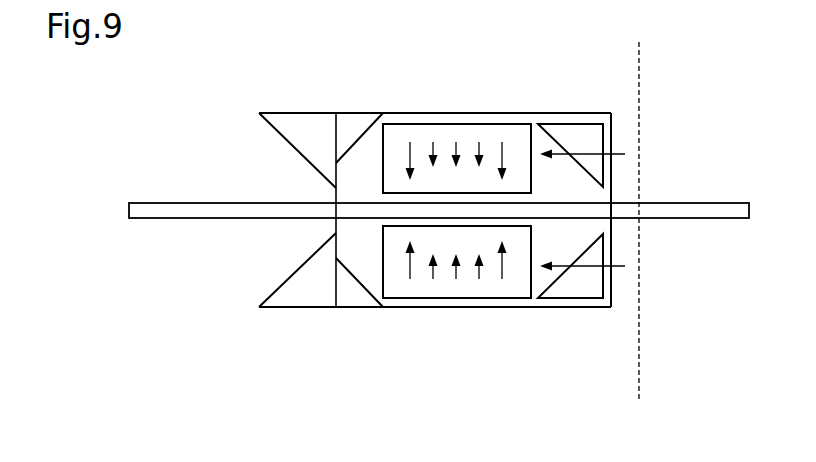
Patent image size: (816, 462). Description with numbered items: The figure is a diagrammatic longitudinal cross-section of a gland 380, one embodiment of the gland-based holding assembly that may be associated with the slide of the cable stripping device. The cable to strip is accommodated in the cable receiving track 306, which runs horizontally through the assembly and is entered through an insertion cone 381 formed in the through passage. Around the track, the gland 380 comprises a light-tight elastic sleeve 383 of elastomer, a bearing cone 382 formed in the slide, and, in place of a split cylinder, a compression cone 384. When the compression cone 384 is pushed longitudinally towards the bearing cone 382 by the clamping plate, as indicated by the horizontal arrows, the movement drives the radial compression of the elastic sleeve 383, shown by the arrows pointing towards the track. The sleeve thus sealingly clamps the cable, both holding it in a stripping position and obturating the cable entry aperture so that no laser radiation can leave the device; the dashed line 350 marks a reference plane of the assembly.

The cable receiving track 306 is at (650, 191).
The reference plane 350 is at (640, 57).
The gland 380 is at (354, 102).
The insertion cone 381 is at (301, 140).
The bearing cone 382 is at (362, 118).
The elastic sleeve 383 is at (455, 133).
The compression cone 384 is at (582, 133).